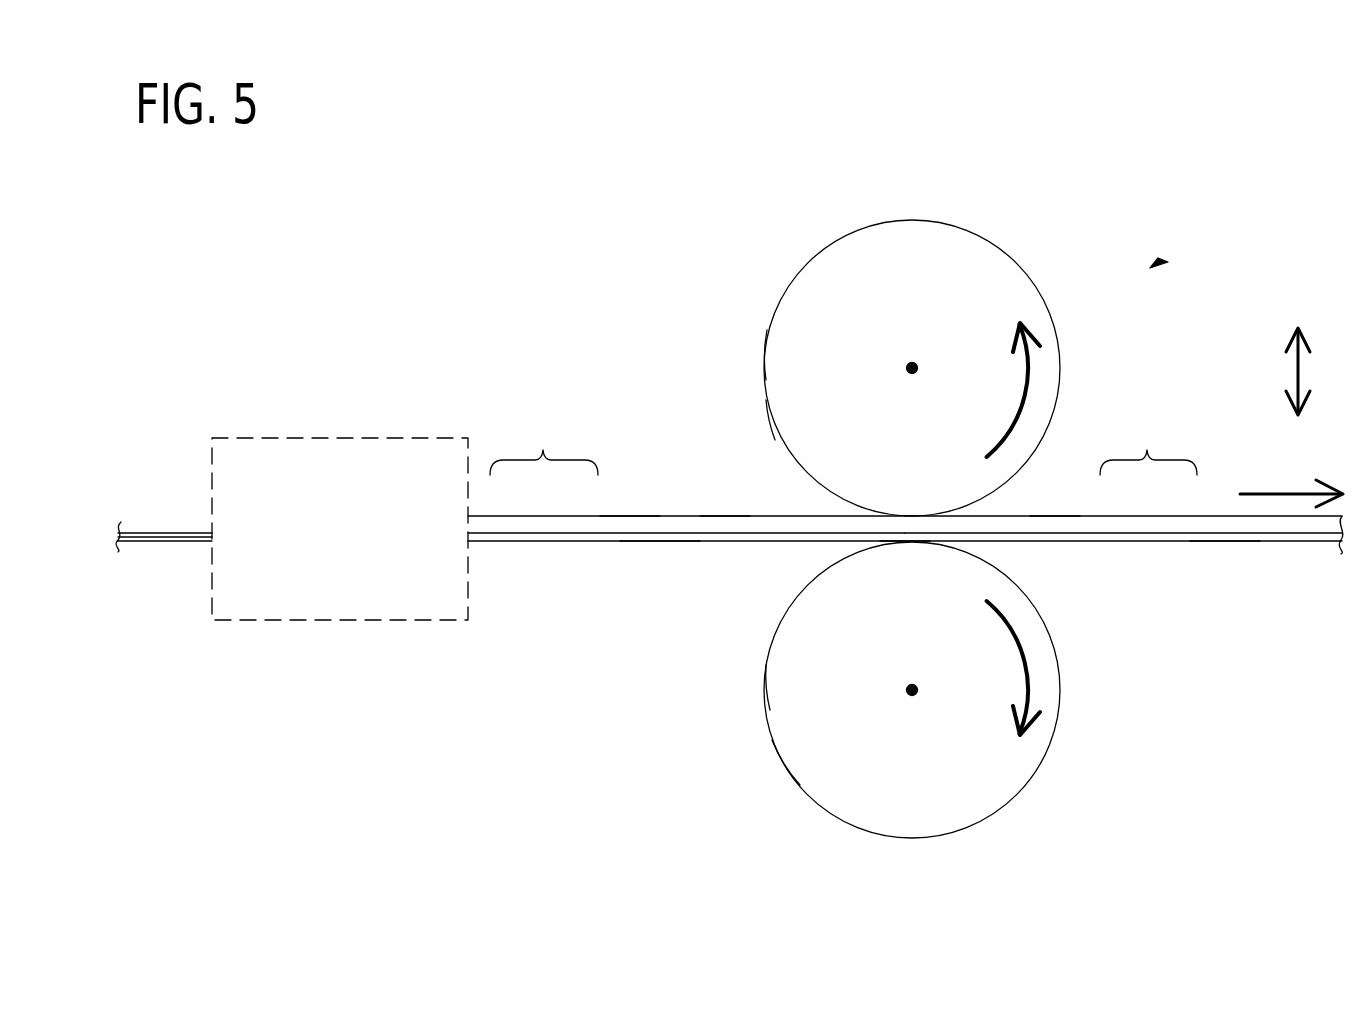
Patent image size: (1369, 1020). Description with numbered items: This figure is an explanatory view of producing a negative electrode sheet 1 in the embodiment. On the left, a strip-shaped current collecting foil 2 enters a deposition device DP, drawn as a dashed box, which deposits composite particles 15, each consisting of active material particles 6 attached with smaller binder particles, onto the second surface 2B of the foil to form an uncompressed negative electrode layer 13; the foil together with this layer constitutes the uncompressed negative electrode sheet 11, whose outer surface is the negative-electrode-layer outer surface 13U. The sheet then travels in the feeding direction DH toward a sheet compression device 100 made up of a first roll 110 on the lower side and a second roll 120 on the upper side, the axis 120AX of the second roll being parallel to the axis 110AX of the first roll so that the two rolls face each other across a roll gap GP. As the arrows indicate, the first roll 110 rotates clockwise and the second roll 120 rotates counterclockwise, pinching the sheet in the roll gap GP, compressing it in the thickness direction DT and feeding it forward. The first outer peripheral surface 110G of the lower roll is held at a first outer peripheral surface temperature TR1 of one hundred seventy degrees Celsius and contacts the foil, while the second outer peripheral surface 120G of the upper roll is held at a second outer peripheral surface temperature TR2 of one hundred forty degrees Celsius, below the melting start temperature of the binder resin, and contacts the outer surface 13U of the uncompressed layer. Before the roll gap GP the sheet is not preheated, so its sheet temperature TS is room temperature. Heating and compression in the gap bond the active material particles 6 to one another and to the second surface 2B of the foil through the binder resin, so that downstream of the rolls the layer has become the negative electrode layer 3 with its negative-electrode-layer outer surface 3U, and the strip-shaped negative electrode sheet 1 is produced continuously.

The sheet compression device 100 is at (1222, 227).
The first roll 110 is at (932, 693).
The axis of the first roll 110AX is at (904, 731).
The first outer peripheral surface 110G is at (746, 762).
The first outer peripheral surface temperature TR1 is at (727, 668).
The second roll 120 is at (924, 361).
The axis of the second roll 120AX is at (922, 327).
The second outer peripheral surface 120G is at (730, 336).
The second outer peripheral surface temperature TR2 is at (734, 412).
The roll gap GP is at (897, 577).
The deposition device DP is at (340, 490).
The current collecting foil 2 is at (729, 537).
The second surface 2B is at (165, 500).
The uncompressed negative electrode layer 13 is at (686, 498).
The negative-electrode-layer outer surface 13U is at (640, 491).
The uncompressed negative electrode sheet 11 is at (544, 445).
The sheet temperature TS is at (725, 491).
The composite particles 15 is at (675, 562).
The negative electrode layer 3 is at (1123, 498).
The negative-electrode-layer outer surface 3U is at (1055, 490).
The negative electrode sheet 1 is at (1148, 445).
The active material particles 6 is at (1225, 566).
The feeding direction DH is at (1291, 485).
The thickness direction DT is at (1317, 371).